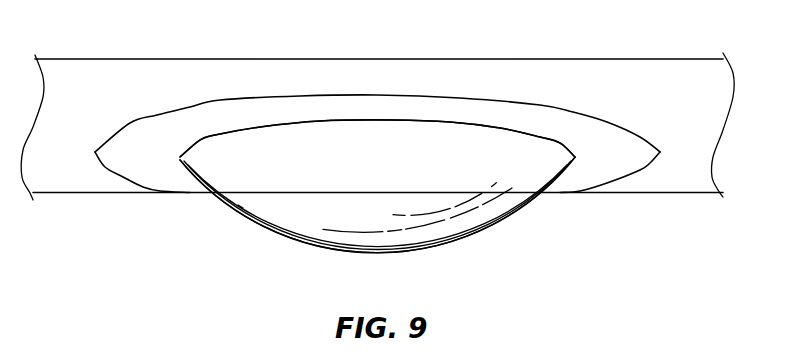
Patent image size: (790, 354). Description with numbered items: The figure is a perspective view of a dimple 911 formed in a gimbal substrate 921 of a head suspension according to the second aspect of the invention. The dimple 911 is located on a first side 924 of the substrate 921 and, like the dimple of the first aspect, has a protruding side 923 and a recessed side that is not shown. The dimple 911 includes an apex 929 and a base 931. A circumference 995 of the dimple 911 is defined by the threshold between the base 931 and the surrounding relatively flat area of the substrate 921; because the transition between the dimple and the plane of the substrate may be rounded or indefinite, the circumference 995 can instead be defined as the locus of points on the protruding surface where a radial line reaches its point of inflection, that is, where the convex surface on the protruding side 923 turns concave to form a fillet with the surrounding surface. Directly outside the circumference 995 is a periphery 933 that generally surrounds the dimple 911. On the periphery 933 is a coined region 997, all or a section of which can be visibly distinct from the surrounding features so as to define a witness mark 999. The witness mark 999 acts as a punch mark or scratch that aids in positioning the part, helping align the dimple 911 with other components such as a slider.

The dimple 911 is at (547, 247).
The gimbal substrate 921 is at (680, 104).
The protruding side 923 is at (327, 250).
The first side 924 is at (663, 182).
The apex 929 is at (428, 238).
The base 931 is at (510, 173).
The periphery 933 is at (204, 70).
The circumference 995 is at (218, 138).
The coined region 997 is at (147, 132).
The witness mark 999 is at (153, 172).